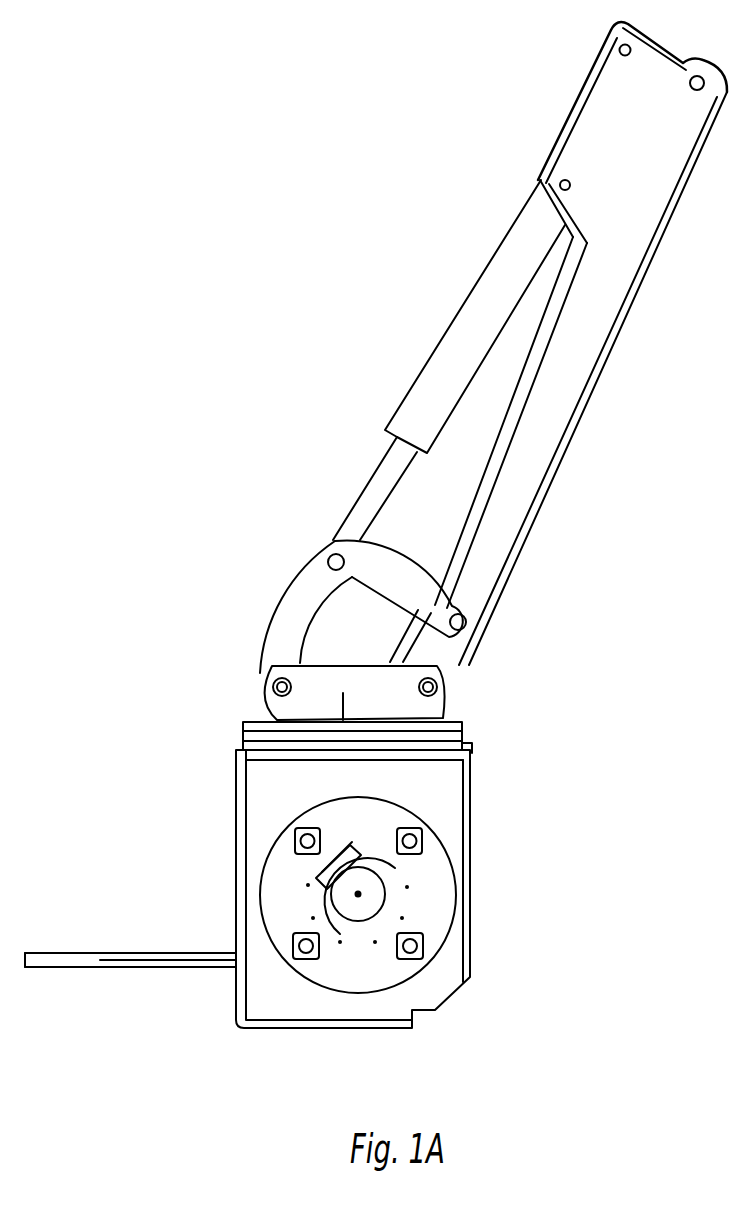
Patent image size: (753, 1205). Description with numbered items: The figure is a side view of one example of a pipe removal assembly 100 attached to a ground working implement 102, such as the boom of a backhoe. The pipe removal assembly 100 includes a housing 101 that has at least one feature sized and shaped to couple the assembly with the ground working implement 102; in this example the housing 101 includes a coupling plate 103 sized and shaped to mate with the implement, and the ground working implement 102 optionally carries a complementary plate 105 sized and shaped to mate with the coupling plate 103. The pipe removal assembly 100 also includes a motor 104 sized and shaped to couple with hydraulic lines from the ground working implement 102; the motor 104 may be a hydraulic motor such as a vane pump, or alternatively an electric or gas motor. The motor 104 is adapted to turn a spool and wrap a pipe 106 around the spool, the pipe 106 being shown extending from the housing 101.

The pipe removal assembly 100 is at (522, 816).
The housing 101 is at (270, 780).
The ground working implement 102 is at (600, 287).
The coupling plate 103 is at (462, 736).
The motor 104 is at (372, 866).
The complementary plate 105 is at (462, 720).
The pipe 106 is at (110, 968).